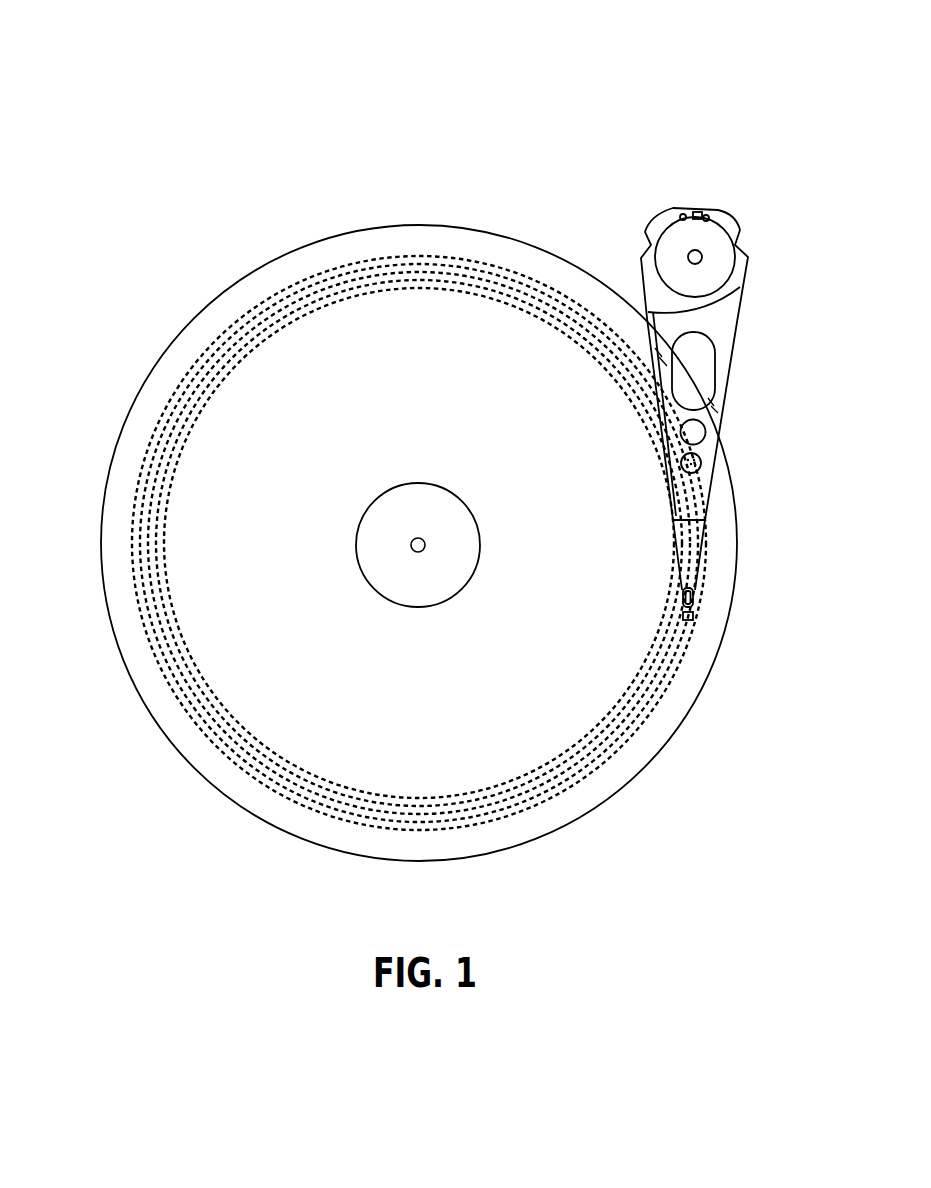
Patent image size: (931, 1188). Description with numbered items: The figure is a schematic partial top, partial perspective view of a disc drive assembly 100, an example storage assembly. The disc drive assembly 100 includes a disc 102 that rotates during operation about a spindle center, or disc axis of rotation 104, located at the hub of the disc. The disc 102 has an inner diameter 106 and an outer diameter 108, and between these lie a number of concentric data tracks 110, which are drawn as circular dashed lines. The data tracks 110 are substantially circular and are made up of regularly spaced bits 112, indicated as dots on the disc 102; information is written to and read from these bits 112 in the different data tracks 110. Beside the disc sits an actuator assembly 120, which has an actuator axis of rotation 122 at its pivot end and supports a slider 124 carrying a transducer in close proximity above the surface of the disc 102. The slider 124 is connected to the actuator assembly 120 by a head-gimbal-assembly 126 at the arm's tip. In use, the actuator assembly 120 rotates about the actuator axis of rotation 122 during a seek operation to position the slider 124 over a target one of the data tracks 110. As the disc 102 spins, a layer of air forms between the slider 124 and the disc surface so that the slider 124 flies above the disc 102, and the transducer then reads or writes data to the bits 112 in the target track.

The disc drive assembly 100 is at (198, 110).
The disc 102 is at (467, 223).
The disc axis of rotation 104 is at (418, 545).
The inner diameter 106 is at (392, 485).
The outer diameter 108 is at (378, 258).
The data tracks 110 is at (190, 735).
The bits 112 is at (350, 815).
The actuator assembly 120 is at (737, 338).
The actuator axis of rotation 122 is at (701, 254).
The slider 124 is at (682, 615).
The head-gimbal-assembly 126 is at (678, 543).